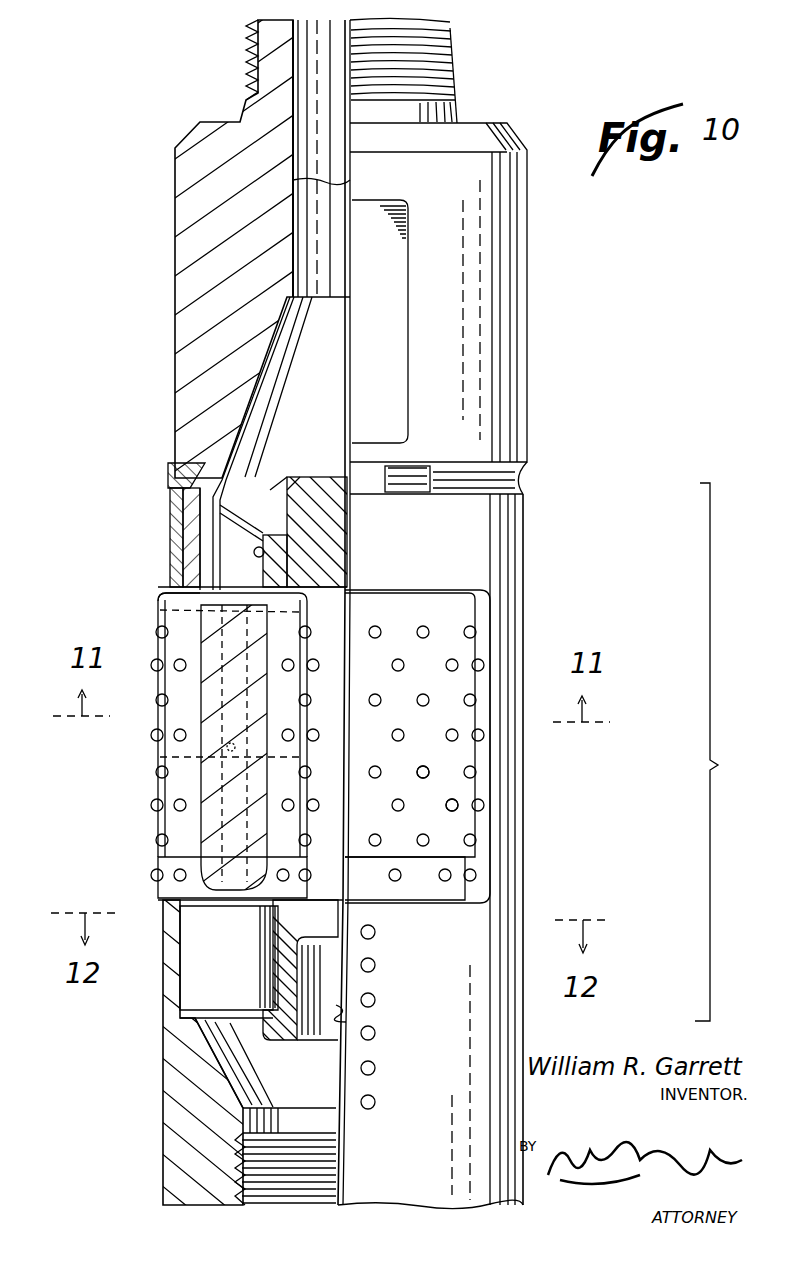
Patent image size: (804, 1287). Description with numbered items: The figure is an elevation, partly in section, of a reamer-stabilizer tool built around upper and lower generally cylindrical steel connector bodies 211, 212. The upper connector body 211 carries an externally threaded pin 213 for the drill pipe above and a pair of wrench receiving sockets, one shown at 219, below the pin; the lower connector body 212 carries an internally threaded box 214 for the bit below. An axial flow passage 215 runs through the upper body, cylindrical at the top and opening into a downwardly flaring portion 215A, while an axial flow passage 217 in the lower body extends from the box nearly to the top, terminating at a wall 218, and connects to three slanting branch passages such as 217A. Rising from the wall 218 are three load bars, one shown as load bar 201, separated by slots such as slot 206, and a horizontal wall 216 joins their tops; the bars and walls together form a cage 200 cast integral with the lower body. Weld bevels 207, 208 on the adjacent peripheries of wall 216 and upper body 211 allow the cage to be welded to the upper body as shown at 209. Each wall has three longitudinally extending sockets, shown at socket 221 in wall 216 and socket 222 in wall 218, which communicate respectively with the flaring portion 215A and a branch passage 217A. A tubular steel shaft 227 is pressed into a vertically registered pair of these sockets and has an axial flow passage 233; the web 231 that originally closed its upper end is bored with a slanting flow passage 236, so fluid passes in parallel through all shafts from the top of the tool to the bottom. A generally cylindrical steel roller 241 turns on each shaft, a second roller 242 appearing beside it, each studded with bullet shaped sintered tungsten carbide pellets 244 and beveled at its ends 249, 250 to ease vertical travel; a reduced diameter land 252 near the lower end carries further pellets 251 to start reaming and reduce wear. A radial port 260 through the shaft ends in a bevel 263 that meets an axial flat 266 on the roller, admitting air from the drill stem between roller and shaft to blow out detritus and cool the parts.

The cage 200 is at (730, 752).
The load bar 201 is at (508, 745).
The slot 206 is at (490, 623).
The weld bevel 207 is at (527, 486).
The weld bevel 208 is at (527, 462).
The weld 209 is at (398, 470).
The upper connector body 211 is at (175, 199).
The lower connector body 212 is at (170, 1115).
The externally threaded pin 213 is at (250, 52).
The internally threaded box 214 is at (235, 1180).
The axial flow passage 215 is at (350, 180).
The downwardly flaring portion 215A is at (272, 391).
The horizontal wall 216 is at (318, 524).
The axial flow passage 217 is at (237, 1140).
The slanting branch passage 217A is at (230, 1050).
The wall 218 is at (323, 922).
The wrench receiving socket 219 is at (408, 320).
The socket 221 is at (172, 535).
The socket 222 is at (186, 935).
The tubular steel shaft 227 is at (180, 990).
The web 231 is at (170, 500).
The axial flow passage 233 is at (262, 552).
The slanting flow passage 236 is at (272, 488).
The roller 241 is at (175, 787).
The roller 242 is at (400, 622).
The sintered tungsten carbide pellet 244 is at (456, 802).
The beveled roller end 249 is at (165, 590).
The beveled roller end 250 is at (165, 903).
The pellets in land 251 is at (470, 876).
The reduced diameter land 252 is at (165, 863).
The port 260 is at (228, 754).
The bevel 263 is at (228, 748).
The axial flat 266 is at (200, 612).